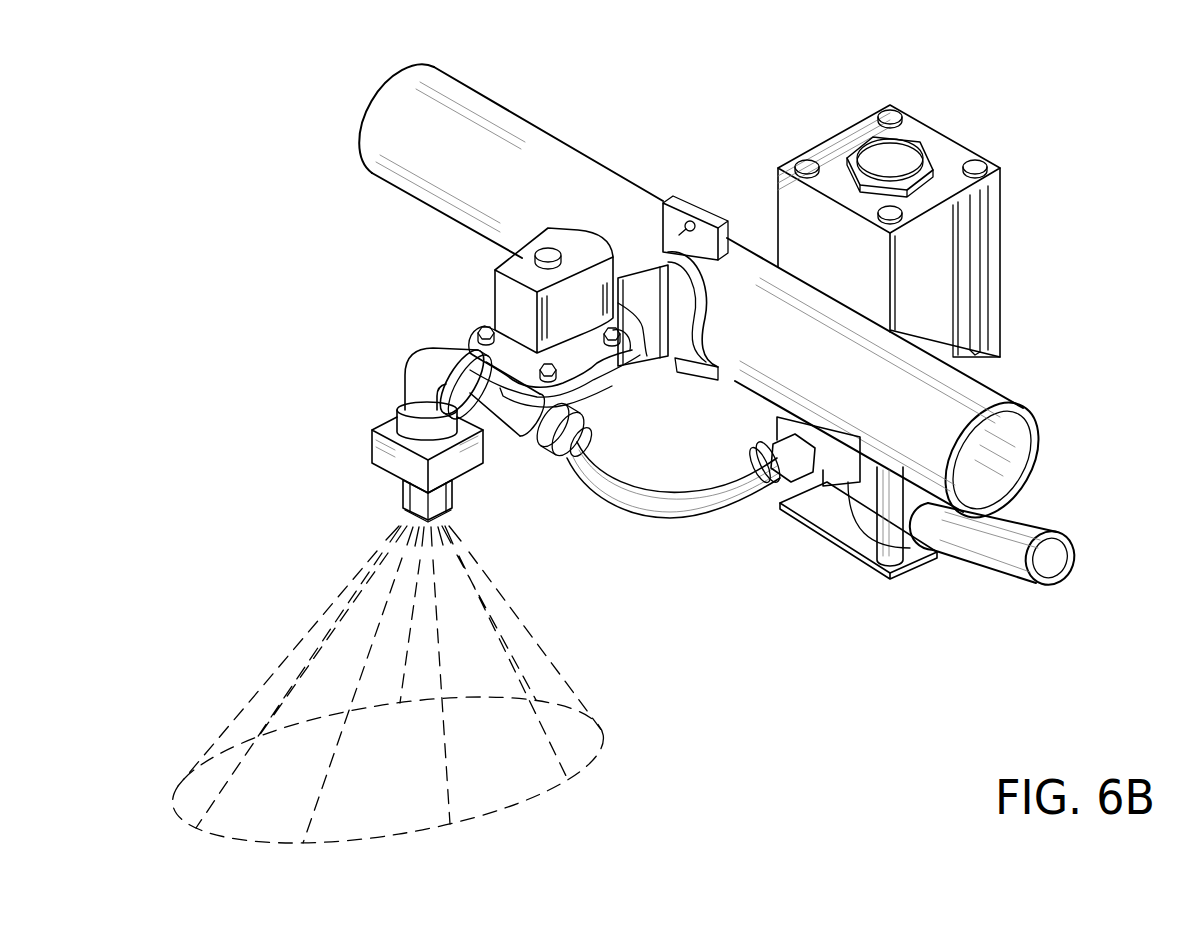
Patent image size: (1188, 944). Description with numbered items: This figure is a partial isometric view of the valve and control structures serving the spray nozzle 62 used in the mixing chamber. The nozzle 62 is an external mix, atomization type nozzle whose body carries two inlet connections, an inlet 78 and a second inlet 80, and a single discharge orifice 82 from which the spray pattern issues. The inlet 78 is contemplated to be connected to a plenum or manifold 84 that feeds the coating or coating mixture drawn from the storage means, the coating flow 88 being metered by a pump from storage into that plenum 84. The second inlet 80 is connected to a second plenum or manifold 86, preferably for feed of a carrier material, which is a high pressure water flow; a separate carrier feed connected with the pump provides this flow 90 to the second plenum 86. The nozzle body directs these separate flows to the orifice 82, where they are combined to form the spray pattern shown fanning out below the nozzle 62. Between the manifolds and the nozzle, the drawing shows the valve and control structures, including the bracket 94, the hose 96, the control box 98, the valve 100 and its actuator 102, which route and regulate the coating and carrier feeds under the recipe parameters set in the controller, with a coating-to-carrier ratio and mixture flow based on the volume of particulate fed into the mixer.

The spray nozzle 62 is at (444, 433).
The inlet connection 78 is at (402, 418).
The second inlet 80 is at (500, 425).
The discharge orifice 82 is at (403, 498).
The plenum or manifold 84 is at (1000, 549).
The second plenum or manifold 86 is at (967, 404).
The coating flow 88 is at (1062, 568).
The carrier flow 90 is at (1006, 472).
The mounting bracket 94 is at (855, 507).
The flexible hose 96 is at (676, 500).
The control box 98 is at (947, 158).
The solenoid valve 100 is at (598, 266).
The solenoid coil 102 is at (550, 254).